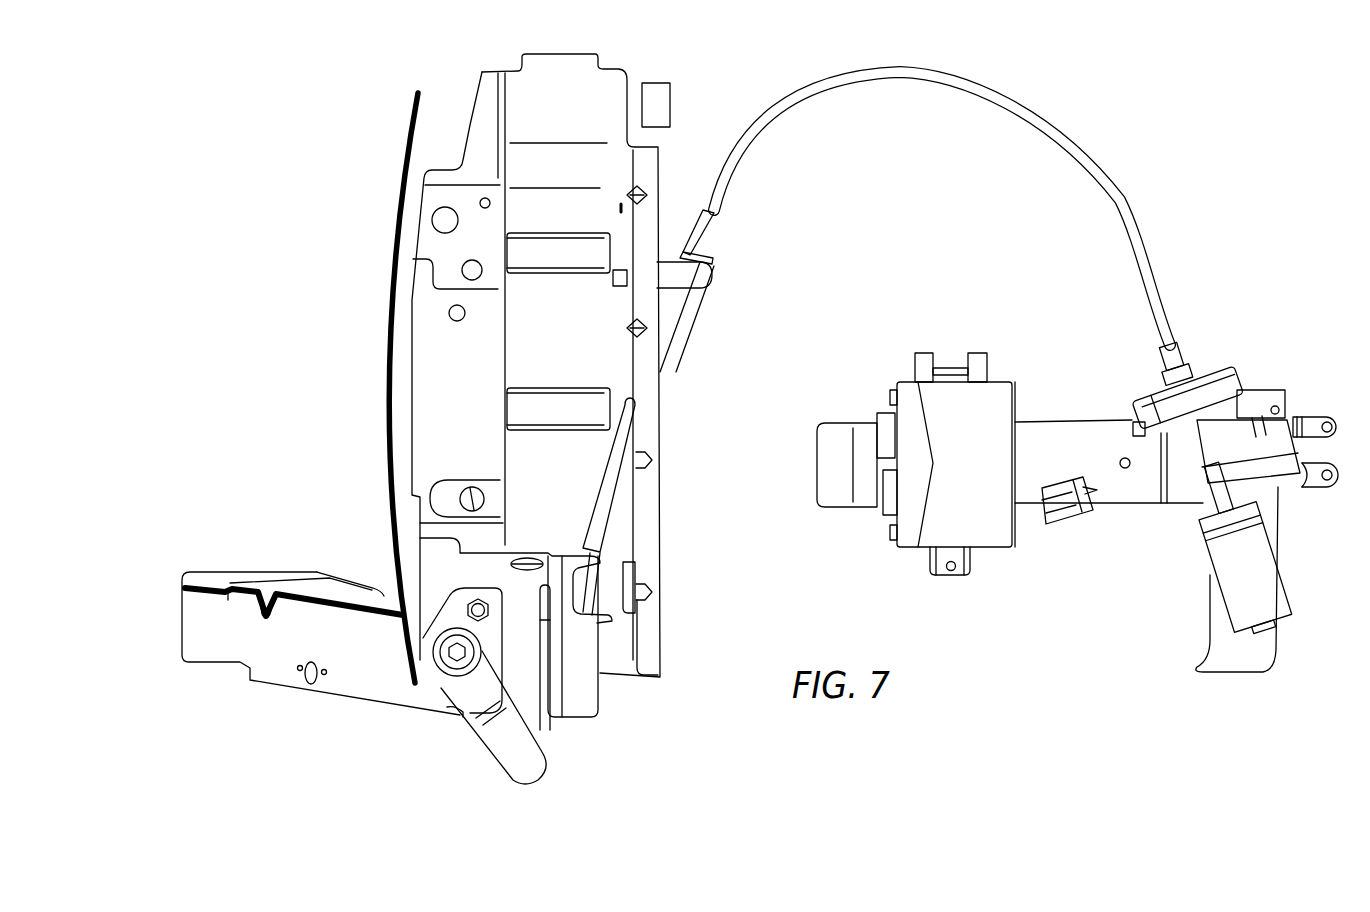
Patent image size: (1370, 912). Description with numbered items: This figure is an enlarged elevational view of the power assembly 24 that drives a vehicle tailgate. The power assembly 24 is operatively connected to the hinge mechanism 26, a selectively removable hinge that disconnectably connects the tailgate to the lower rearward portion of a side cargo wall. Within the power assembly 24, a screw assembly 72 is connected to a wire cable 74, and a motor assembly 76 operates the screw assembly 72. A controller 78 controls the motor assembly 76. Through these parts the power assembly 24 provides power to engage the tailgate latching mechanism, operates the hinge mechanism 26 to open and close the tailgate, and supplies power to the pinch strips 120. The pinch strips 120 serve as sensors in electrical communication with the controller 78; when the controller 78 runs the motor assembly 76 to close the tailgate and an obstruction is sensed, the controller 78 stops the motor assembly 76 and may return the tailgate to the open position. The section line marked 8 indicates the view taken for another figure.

The section line 8- 8 is at (717, 207).
The power assembly 24 is at (1088, 107).
The hinge mechanism 26 is at (453, 762).
The screw assembly 72 is at (698, 348).
The wire cable 74 is at (945, 88).
The motor assembly 76 is at (1267, 373).
The controller 78 is at (995, 558).
The pinch strips 120 is at (388, 356).